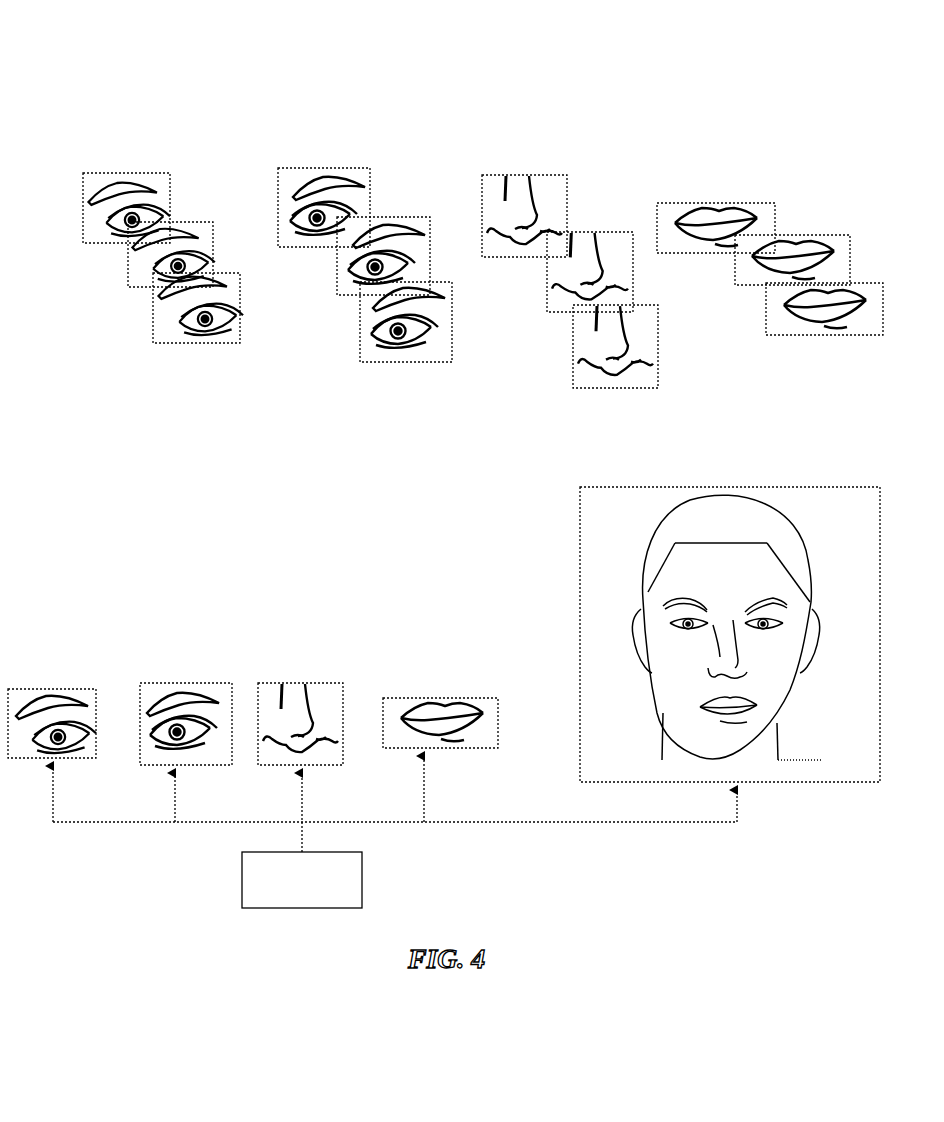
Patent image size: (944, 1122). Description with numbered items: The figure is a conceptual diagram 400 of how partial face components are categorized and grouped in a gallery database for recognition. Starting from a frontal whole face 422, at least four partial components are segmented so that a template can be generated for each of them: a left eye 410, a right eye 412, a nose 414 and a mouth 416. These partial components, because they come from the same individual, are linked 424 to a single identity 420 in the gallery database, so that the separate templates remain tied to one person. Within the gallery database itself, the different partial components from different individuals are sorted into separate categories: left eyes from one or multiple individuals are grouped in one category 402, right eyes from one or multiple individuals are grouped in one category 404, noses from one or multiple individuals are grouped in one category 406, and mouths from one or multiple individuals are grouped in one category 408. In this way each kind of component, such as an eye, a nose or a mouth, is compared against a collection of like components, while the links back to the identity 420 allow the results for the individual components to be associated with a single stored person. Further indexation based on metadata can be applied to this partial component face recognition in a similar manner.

The face recognition training process 400 is at (173, 87).
The left eye category 402 is at (165, 323).
The right eye category 404 is at (362, 353).
The nose category 406 is at (575, 336).
The mouth category 408 is at (778, 313).
The left eye 410 is at (47, 687).
The right eye 412 is at (185, 685).
The nose 414 is at (322, 688).
The mouth 416 is at (470, 696).
The identity 420 is at (355, 880).
The frontal whole face 422 is at (823, 505).
The link 424 is at (528, 822).